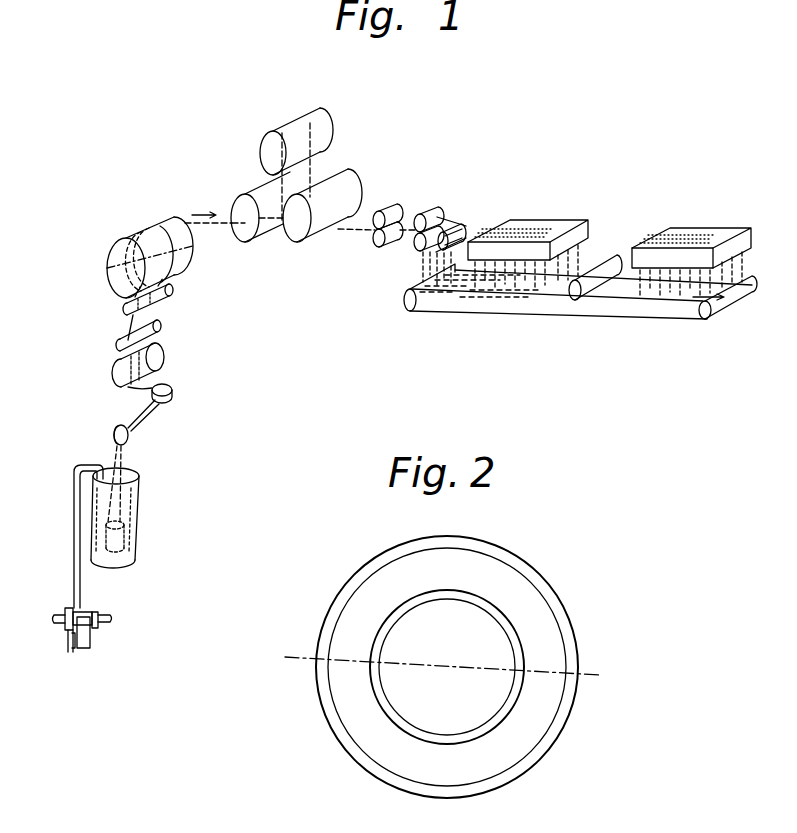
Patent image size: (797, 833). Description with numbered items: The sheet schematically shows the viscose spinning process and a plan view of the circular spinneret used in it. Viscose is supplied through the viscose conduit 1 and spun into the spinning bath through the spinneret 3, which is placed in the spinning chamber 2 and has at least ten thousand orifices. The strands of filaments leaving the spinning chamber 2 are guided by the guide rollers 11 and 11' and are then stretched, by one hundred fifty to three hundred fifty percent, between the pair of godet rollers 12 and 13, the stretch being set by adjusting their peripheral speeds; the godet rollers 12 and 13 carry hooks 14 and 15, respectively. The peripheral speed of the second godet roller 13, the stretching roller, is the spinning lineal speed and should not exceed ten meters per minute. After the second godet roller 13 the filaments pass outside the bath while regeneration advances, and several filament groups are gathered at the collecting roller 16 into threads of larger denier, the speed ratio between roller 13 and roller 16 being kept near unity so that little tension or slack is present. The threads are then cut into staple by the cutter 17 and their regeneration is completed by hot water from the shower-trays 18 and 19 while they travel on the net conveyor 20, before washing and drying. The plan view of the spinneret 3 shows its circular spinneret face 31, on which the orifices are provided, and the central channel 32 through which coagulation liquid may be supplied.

In FIG. 1, the viscose conduit 1 is at (82, 463).
In FIG. 1, the spinning chamber 2 is at (139, 510).
In FIG. 1, the spinneret 3 is at (126, 540).
In FIG. 2, the spinneret 3 is at (589, 604).
In FIG. 1, the guide roller 11 is at (146, 425).
In FIG. 1, the guide roller 11' is at (178, 394).
In FIG. 1, the godet roller 12 is at (165, 353).
In FIG. 1, the second godet roller 13 is at (188, 250).
In FIG. 1, the hook 14 is at (160, 327).
In FIG. 1, the hook 15 is at (174, 290).
In FIG. 1, the collecting roller 16 is at (281, 236).
In FIG. 1, the cutter 17 is at (446, 216).
In FIG. 1, the hot water shower-tray 18 is at (546, 221).
In FIG. 1, the hot water shower-tray 19 is at (699, 228).
In FIG. 1, the net conveyor 20 is at (488, 309).
In FIG. 2, the circular spinneret face 31 is at (518, 752).
In FIG. 2, the central channel 32 is at (457, 643).